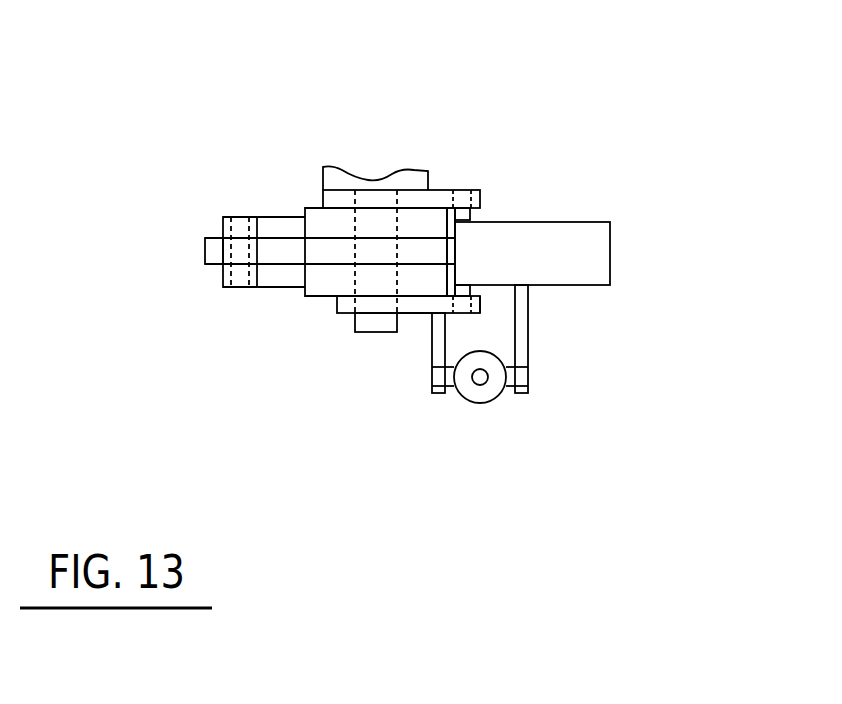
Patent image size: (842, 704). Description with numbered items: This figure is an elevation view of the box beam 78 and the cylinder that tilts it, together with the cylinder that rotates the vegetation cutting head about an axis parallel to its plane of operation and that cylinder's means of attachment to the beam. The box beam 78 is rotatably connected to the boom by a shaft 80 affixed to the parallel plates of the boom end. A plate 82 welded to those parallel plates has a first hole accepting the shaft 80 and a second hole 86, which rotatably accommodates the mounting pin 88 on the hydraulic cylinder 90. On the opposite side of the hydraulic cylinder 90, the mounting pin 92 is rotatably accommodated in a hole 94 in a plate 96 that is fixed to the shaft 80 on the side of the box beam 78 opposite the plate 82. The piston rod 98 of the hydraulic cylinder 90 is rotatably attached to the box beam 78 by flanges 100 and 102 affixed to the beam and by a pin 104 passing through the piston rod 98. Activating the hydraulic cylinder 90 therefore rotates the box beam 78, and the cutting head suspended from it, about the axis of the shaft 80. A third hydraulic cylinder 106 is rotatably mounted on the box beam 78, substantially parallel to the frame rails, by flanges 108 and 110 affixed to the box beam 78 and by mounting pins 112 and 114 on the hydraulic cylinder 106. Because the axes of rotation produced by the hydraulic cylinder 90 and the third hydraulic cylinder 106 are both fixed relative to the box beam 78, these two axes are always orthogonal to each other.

The box beam 78 is at (282, 216).
The shaft 80 is at (355, 332).
The plate 82 is at (437, 190).
The second hole 86 is at (531, 141).
The mounting pin 88 is at (473, 213).
The hydraulic cylinder 90 is at (612, 252).
The mounting pin 92 is at (472, 296).
The hole 94 is at (480, 313).
The plate 96 is at (352, 379).
The piston rod 98 is at (325, 237).
The flange 100 is at (223, 220).
The flange 102 is at (223, 275).
The pin 104 is at (240, 253).
The third hydraulic cylinder 106 is at (483, 403).
The flange 108 is at (430, 360).
The flange 110 is at (528, 365).
The mounting pin 112 is at (419, 468).
The mounting pin 114 is at (547, 468).